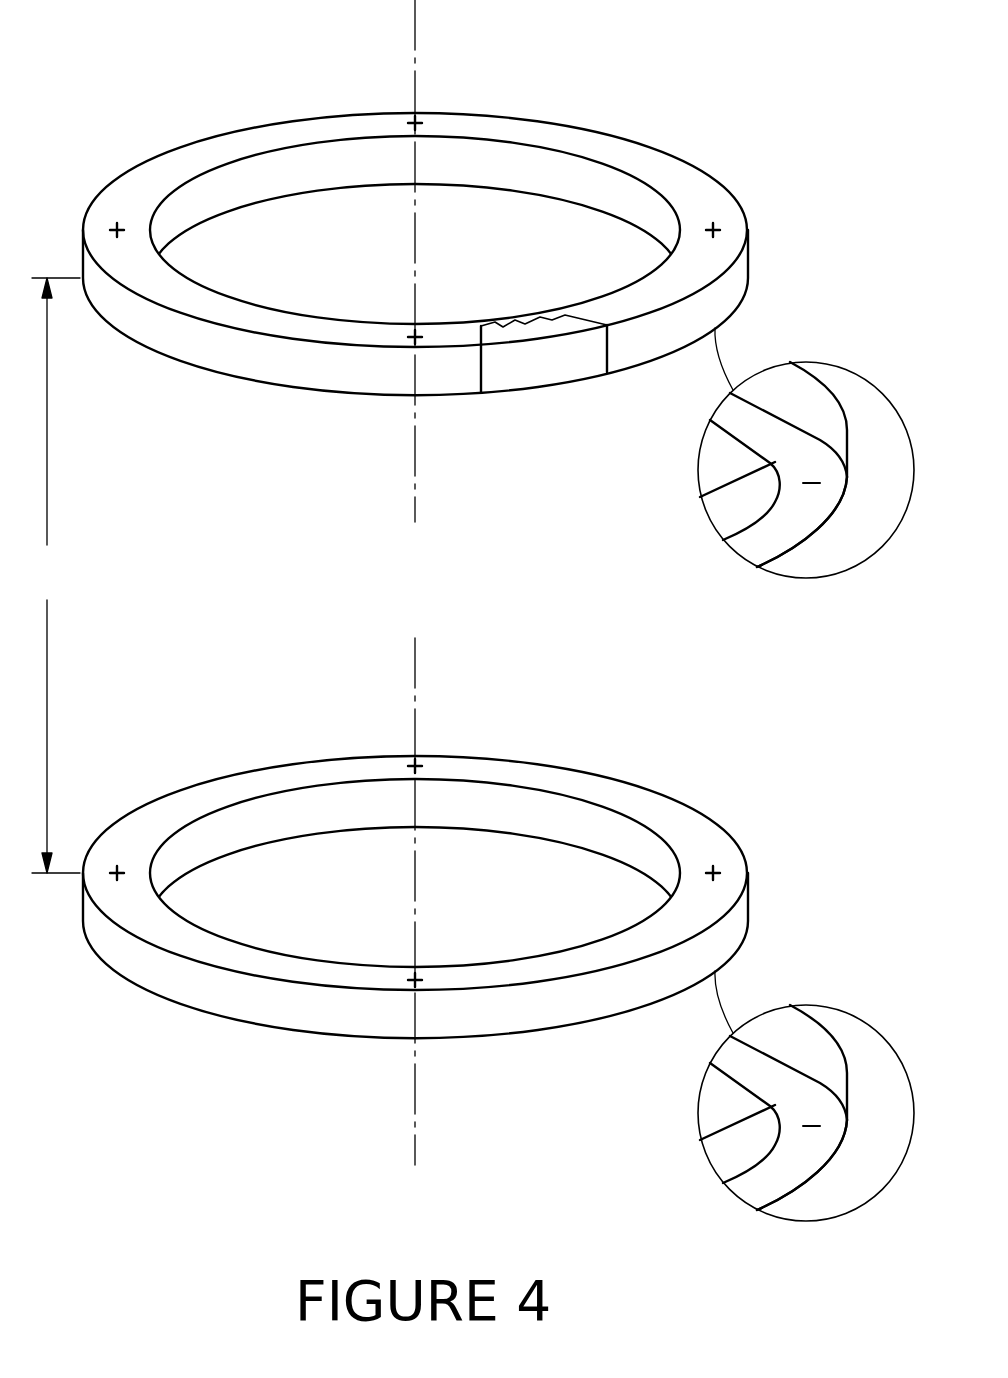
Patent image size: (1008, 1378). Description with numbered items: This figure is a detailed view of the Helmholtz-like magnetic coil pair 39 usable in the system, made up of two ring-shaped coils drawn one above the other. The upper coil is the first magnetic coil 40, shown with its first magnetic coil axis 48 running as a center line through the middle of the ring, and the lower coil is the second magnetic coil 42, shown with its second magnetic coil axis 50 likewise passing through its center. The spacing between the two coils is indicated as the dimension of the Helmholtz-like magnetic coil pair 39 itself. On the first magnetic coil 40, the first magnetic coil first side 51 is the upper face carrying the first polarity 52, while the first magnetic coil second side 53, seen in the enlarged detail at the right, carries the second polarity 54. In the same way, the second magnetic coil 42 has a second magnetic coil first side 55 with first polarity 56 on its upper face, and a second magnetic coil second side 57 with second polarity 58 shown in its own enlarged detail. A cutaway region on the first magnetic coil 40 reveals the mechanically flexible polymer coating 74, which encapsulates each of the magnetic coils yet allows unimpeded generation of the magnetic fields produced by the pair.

The first magnetic coil 40 is at (498, 289).
The second magnetic coil 42 is at (498, 929).
The first magnetic coil first side 51 is at (690, 180).
The second magnetic coil first side 55 is at (690, 823).
The first polarity 52 is at (720, 220).
The first polarity 56 is at (720, 863).
The first magnetic coil axis 48 is at (417, 233).
The second magnetic coil axis 50 is at (417, 876).
The mechanically flexible polymer coating 74 is at (606, 368).
The first magnetic coil second side 53 is at (793, 528).
The second magnetic coil second side 57 is at (793, 1171).
The second polarity 54 is at (812, 485).
The second polarity 58 is at (812, 1128).
The Helmholtz-like magnetic coil pair 39 is at (55, 575).